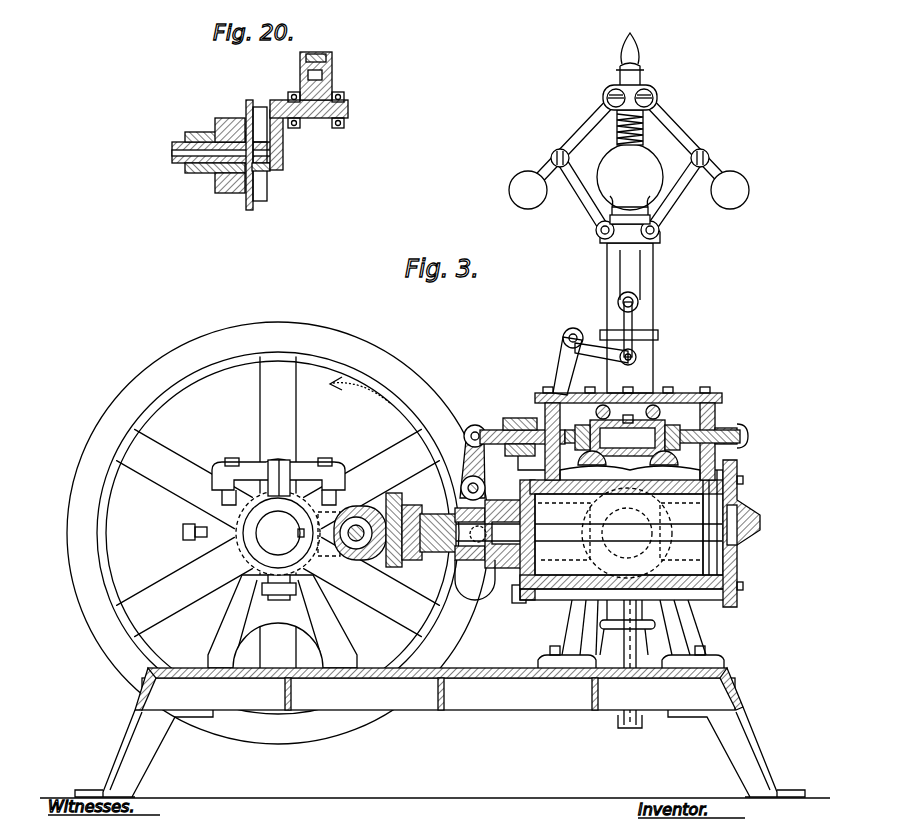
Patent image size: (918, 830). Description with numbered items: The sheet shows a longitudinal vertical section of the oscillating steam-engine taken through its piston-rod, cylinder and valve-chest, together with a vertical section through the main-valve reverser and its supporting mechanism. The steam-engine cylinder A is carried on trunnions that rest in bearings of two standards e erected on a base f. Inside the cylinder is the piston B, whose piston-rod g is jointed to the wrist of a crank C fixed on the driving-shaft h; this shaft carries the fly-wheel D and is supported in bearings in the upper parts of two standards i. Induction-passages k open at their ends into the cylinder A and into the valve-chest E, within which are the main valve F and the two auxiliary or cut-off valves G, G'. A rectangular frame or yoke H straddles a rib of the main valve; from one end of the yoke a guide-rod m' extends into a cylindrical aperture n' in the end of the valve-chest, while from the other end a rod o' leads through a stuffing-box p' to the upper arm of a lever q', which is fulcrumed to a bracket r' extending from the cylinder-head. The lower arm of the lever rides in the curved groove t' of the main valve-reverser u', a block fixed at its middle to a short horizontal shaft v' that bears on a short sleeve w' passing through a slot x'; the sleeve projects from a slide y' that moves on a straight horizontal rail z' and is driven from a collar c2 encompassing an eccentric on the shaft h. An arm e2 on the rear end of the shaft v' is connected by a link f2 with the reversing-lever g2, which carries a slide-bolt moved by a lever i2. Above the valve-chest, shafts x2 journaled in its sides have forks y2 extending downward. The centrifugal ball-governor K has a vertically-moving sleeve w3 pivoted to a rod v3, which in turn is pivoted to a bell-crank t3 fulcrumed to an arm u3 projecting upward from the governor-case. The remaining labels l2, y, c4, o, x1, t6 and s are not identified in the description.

In FIG. 3, the fly-wheel D is at (278, 533).
In FIG. 3, the direction arrow l2 is at (360, 395).
In FIG. 3, the driving-shaft h is at (278, 533).
In FIG. 3, the collar c2 is at (278, 481).
In FIG. 3, the standards i is at (282, 621).
In FIG. 3, the crank C is at (383, 530).
In FIG. 20, the rail z' is at (230, 120).
In FIG. 3, the rail z' is at (483, 534).
In FIG. 20, the slide y' is at (230, 190).
In FIG. 3, the slide y' is at (439, 497).
In FIG. 20, the curved groove t' is at (260, 154).
In FIG. 3, the curved groove t' is at (475, 580).
In FIG. 20, the main valve-reverser u' is at (253, 163).
In FIG. 3, the main valve-reverser u' is at (490, 592).
In FIG. 3, the link f2 is at (512, 596).
In FIG. 3, the pin y is at (507, 585).
In FIG. 20, the lever q' is at (309, 111).
In FIG. 3, the lever q' is at (480, 462).
In FIG. 20, the rod o' is at (322, 46).
In FIG. 3, the rod o' is at (522, 428).
In FIG. 3, the stuffing-box p' is at (524, 435).
In FIG. 3, the piston-rod g is at (589, 532).
In FIG. 3, the steam-engine cylinder A is at (627, 540).
In FIG. 3, the induction-passages k is at (619, 526).
In FIG. 3, the main valve F is at (617, 500).
In FIG. 3, the piston B is at (713, 522).
In FIG. 3, the reversing-lever g2 is at (750, 533).
In FIG. 3, the lever i2 is at (755, 536).
In FIG. 3, the standards e is at (631, 634).
In FIG. 3, the column c4 is at (629, 628).
In FIG. 3, the drain pipe o is at (635, 666).
In FIG. 3, the base f is at (435, 724).
In FIG. 3, the valve-chest E is at (628, 426).
In FIG. 3, the cylindrical aperture n' is at (731, 427).
In FIG. 3, the guide-rod m' is at (652, 428).
In FIG. 3, the yoke H is at (623, 432).
In FIG. 3, the roller x1 is at (594, 410).
In FIG. 3, the shaft x2 is at (663, 410).
In FIG. 3, the forks y2 is at (630, 412).
In FIG. 3, the auxiliary valve G is at (583, 457).
In FIG. 3, the auxiliary valve G' is at (673, 457).
In FIG. 3, the sleeve w3 is at (629, 318).
In FIG. 3, the rod v3 is at (634, 324).
In FIG. 3, the bell-crank t3 is at (568, 361).
In FIG. 3, the lever arm t6 is at (605, 351).
In FIG. 3, the arm u3 is at (596, 375).
In FIG. 3, the centrifugal ball-governor K is at (629, 138).
In FIG. 20, the arm e2 is at (176, 163).
In FIG. 20, the slot x' is at (212, 127).
In FIG. 20, the sleeve w' is at (215, 181).
In FIG. 20, the nut s is at (270, 168).
In FIG. 20, the bracket r' is at (316, 108).
In FIG. 20, the shaft v' is at (210, 153).